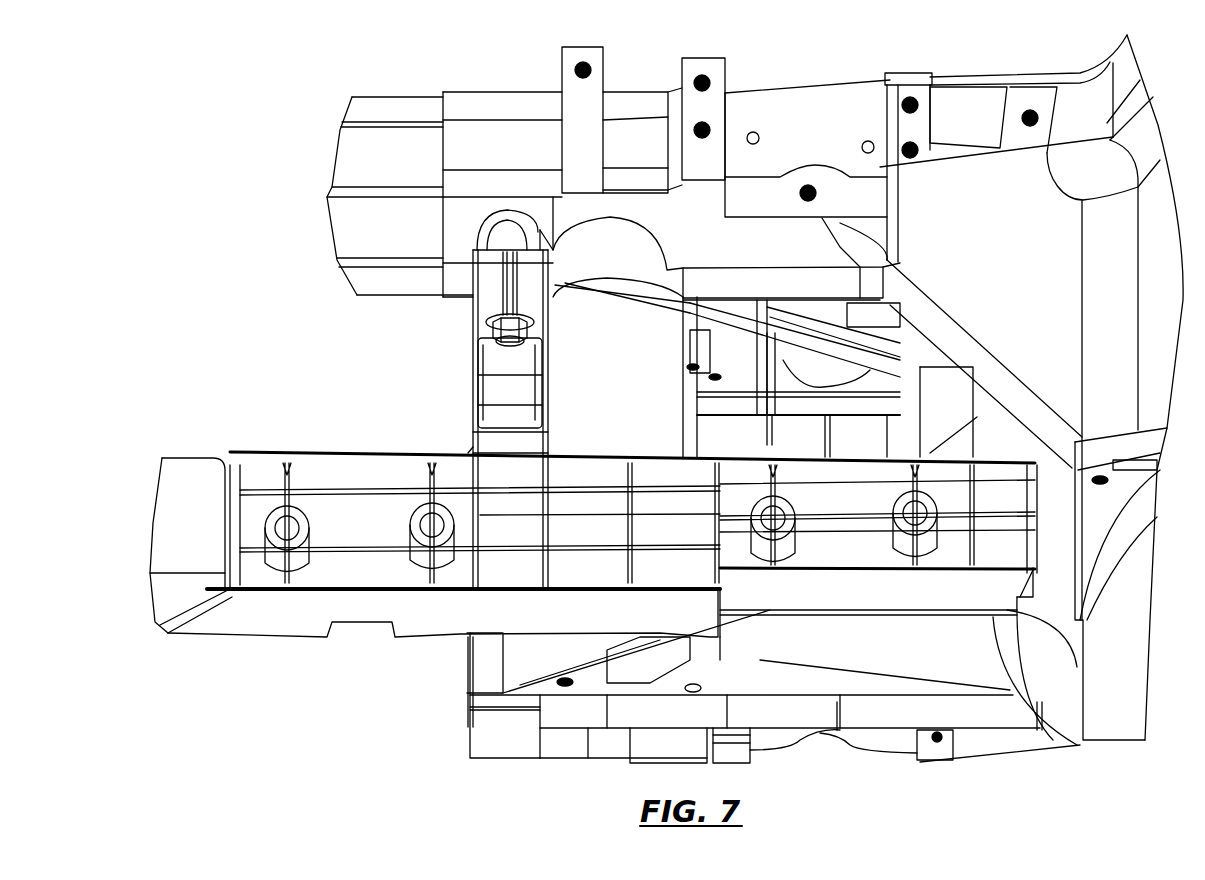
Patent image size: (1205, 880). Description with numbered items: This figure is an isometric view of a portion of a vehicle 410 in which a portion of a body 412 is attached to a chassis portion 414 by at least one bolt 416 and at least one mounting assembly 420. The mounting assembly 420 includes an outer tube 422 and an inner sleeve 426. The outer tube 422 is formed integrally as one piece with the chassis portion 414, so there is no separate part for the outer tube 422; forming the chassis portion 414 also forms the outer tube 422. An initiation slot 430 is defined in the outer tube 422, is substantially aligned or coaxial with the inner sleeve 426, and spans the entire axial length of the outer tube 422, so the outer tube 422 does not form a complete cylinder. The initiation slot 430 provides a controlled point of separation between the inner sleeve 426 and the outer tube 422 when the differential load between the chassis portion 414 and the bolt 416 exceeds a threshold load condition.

The vehicle 410 is at (288, 135).
The body 412 is at (487, 105).
The chassis portion 414 is at (523, 407).
The bolt 416 is at (510, 343).
The mounting assembly 420 is at (458, 318).
The outer tube 422 is at (480, 277).
The inner sleeve 426 is at (510, 297).
The initiation slot 430 is at (508, 210).